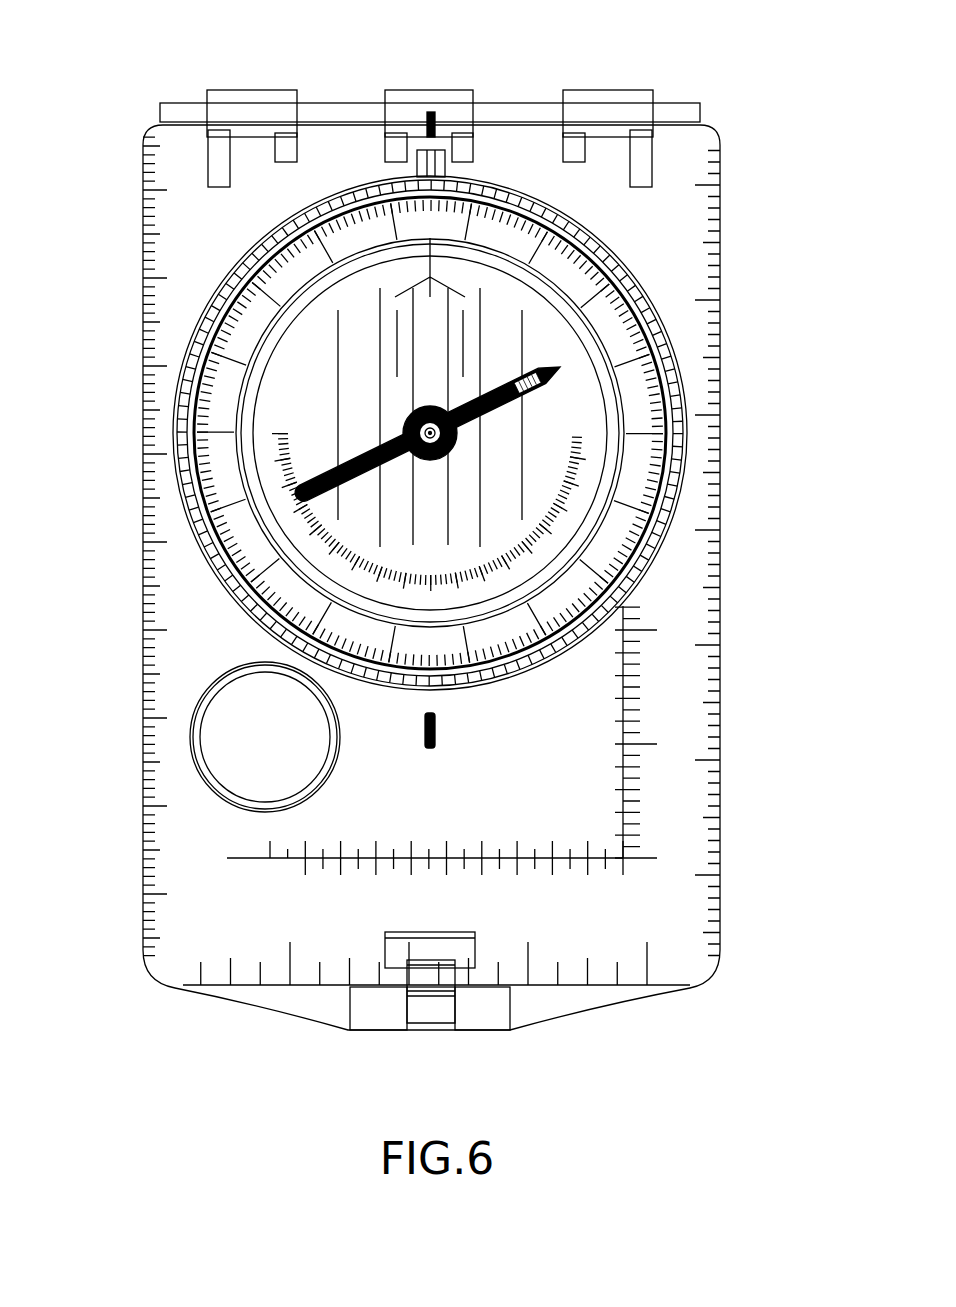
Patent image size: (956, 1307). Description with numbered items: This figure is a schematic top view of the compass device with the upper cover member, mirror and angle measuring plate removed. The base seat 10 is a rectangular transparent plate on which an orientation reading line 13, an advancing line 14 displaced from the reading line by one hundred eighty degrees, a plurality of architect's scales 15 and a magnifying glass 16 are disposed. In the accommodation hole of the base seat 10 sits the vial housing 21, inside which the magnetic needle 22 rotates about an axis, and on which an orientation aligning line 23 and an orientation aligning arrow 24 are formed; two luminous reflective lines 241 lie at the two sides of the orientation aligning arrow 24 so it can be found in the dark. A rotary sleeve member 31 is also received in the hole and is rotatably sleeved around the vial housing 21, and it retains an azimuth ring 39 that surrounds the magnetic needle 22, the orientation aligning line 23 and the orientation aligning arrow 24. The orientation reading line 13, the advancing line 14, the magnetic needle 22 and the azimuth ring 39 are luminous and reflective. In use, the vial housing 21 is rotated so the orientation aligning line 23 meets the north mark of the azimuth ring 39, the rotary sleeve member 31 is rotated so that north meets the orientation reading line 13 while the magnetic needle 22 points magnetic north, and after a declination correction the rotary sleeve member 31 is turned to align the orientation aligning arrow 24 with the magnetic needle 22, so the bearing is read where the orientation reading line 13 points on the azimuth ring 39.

The base seat 10 is at (728, 818).
The orientation reading line 13 is at (437, 108).
The advancing line 14 is at (440, 731).
The architect's scales 15 is at (625, 802).
The magnifying glass 16 is at (225, 744).
The vial housing 21 is at (312, 318).
The magnetic needle 22 is at (542, 362).
The orientation aligning line 23 is at (431, 256).
The orientation aligning arrow 24 is at (463, 340).
The luminous reflective lines 241 is at (545, 335).
The rotary sleeve member 31 is at (288, 217).
The azimuth ring 39 is at (371, 197).